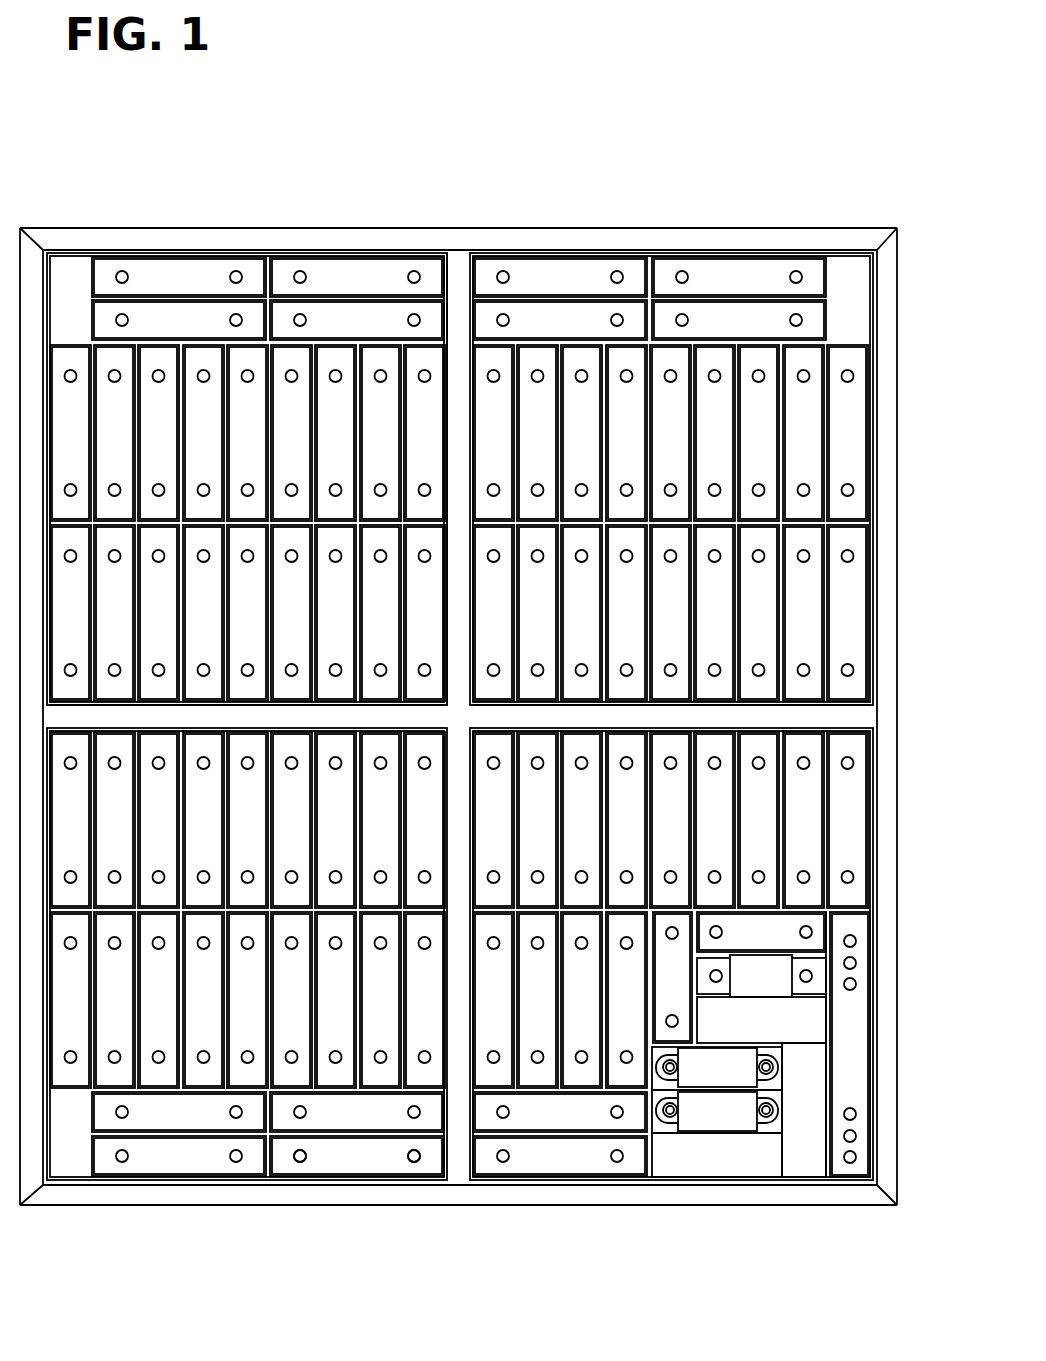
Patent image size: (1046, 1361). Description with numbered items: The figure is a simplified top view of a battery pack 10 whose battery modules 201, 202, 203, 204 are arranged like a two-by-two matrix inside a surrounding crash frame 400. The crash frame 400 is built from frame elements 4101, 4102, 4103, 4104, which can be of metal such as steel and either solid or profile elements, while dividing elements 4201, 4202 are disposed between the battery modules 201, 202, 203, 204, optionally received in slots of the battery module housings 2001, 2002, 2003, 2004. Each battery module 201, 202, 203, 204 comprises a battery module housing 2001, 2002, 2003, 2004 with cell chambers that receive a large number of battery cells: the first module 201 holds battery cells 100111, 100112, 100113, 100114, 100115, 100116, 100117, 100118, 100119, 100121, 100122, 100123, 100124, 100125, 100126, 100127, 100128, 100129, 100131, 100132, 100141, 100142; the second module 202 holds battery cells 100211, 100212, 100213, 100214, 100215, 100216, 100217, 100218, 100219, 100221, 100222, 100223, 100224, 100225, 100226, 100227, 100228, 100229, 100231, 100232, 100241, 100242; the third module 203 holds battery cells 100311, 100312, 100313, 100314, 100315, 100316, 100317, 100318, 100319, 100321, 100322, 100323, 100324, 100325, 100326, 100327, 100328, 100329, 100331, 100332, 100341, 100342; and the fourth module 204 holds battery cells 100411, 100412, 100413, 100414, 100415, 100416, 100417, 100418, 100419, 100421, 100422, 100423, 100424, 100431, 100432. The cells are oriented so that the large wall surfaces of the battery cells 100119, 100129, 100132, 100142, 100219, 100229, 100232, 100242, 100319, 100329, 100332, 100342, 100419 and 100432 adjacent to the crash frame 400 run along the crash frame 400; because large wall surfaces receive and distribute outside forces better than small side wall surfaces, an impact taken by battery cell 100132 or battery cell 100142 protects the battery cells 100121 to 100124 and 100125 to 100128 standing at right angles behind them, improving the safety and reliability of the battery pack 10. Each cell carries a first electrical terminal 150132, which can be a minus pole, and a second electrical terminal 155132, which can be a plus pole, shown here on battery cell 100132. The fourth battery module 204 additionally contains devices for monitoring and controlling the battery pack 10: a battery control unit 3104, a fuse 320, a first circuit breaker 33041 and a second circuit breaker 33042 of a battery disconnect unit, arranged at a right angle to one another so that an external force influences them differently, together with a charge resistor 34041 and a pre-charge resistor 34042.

The battery pack 10 is at (590, 102).
The crash frame 400 is at (461, 707).
The frame element 4101 is at (390, 240).
The frame element 4102 is at (888, 268).
The frame element 4103 is at (557, 1195).
The frame element 4104 is at (28, 268).
The dividing element 4201 is at (190, 718).
The dividing element 4202 is at (460, 258).
The battery module 201 is at (122, 1188).
The battery module 202 is at (138, 248).
The battery module 203 is at (690, 248).
The battery module 204 is at (737, 1187).
The battery module housing 2001 is at (222, 1180).
The battery module housing 2002 is at (240, 255).
The battery module housing 2003 is at (625, 253).
The battery module housing 2004 is at (668, 1180).
The first electrical terminal 150132 is at (301, 1163).
The second electrical terminal 155132 is at (415, 1163).
The battery control unit 3104 is at (853, 1044).
The fuse 320 is at (761, 977).
The first circuit breaker 33041 is at (761, 933).
The second circuit breaker 33042 is at (676, 977).
The charge resistor 34041 is at (717, 1069).
The pre-charge resistor 34042 is at (717, 1112).
The battery cell 100111 is at (427, 820).
The battery cell 100112 is at (383, 820).
The battery cell 100113 is at (339, 820).
The battery cell 100114 is at (295, 820).
The battery cell 100115 is at (250, 820).
The battery cell 100116 is at (206, 820).
The battery cell 100117 is at (162, 820).
The battery cell 100118 is at (118, 820).
The battery cell 100119 is at (73, 820).
The battery cell 100121 is at (427, 1000).
The battery cell 100122 is at (383, 1000).
The battery cell 100123 is at (339, 1000).
The battery cell 100124 is at (295, 1000).
The battery cell 100125 is at (250, 1000).
The battery cell 100126 is at (206, 1000).
The battery cell 100127 is at (162, 1000).
The battery cell 100128 is at (118, 1000).
The battery cell 100129 is at (73, 1000).
The battery cell 100131 is at (357, 1110).
The battery cell 100132 is at (375, 1213).
The battery cell 100141 is at (179, 1110).
The battery cell 100142 is at (179, 1154).
The battery cell 100211 is at (427, 613).
The battery cell 100212 is at (383, 613).
The battery cell 100213 is at (339, 613).
The battery cell 100214 is at (295, 613).
The battery cell 100215 is at (250, 613).
The battery cell 100216 is at (206, 613).
The battery cell 100217 is at (162, 613).
The battery cell 100218 is at (118, 613).
The battery cell 100219 is at (73, 613).
The battery cell 100221 is at (427, 433).
The battery cell 100222 is at (383, 433).
The battery cell 100223 is at (339, 433).
The battery cell 100224 is at (295, 433).
The battery cell 100225 is at (250, 433).
The battery cell 100226 is at (206, 433).
The battery cell 100227 is at (162, 433).
The battery cell 100228 is at (118, 433).
The battery cell 100229 is at (73, 433).
The battery cell 100231 is at (357, 318).
The battery cell 100232 is at (357, 275).
The battery cell 100241 is at (179, 318).
The battery cell 100242 is at (179, 275).
The battery cell 100311 is at (496, 613).
The battery cell 100312 is at (540, 613).
The battery cell 100313 is at (584, 613).
The battery cell 100314 is at (629, 613).
The battery cell 100315 is at (673, 613).
The battery cell 100316 is at (717, 613).
The battery cell 100317 is at (761, 613).
The battery cell 100318 is at (806, 613).
The battery cell 100319 is at (850, 613).
The battery cell 100321 is at (496, 433).
The battery cell 100322 is at (540, 433).
The battery cell 100323 is at (584, 433).
The battery cell 100324 is at (629, 433).
The battery cell 100325 is at (673, 433).
The battery cell 100326 is at (717, 433).
The battery cell 100327 is at (761, 433).
The battery cell 100328 is at (806, 433).
The battery cell 100329 is at (850, 433).
The battery cell 100331 is at (560, 318).
The battery cell 100332 is at (560, 275).
The battery cell 100341 is at (739, 318).
The battery cell 100342 is at (739, 275).
The battery cell 100411 is at (496, 820).
The battery cell 100412 is at (540, 820).
The battery cell 100413 is at (584, 820).
The battery cell 100414 is at (629, 820).
The battery cell 100415 is at (673, 820).
The battery cell 100416 is at (717, 820).
The battery cell 100417 is at (761, 820).
The battery cell 100418 is at (806, 820).
The battery cell 100419 is at (850, 820).
The battery cell 100421 is at (496, 1000).
The battery cell 100422 is at (540, 1000).
The battery cell 100423 is at (584, 1000).
The battery cell 100424 is at (629, 1000).
The battery cell 100431 is at (560, 1110).
The battery cell 100432 is at (560, 1154).